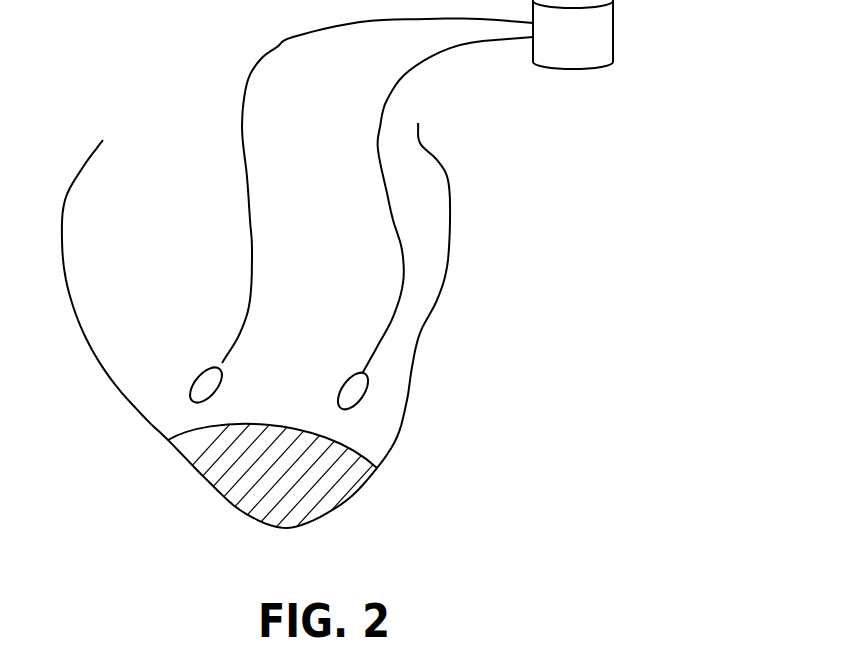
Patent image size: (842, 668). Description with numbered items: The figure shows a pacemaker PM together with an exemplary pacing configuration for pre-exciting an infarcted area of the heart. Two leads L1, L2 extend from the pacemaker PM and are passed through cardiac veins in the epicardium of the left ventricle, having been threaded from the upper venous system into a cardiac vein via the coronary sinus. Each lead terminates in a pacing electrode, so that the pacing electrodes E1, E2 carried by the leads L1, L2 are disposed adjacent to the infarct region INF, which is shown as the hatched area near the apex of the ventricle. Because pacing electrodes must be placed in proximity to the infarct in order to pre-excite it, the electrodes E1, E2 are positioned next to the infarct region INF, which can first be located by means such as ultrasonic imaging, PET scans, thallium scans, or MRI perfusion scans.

The pacemaker PM is at (614, 30).
The lead L1 is at (276, 48).
The lead L2 is at (380, 119).
The pacing electrode E1 is at (196, 378).
The pacing electrode E2 is at (342, 391).
The infarct region INF is at (337, 497).